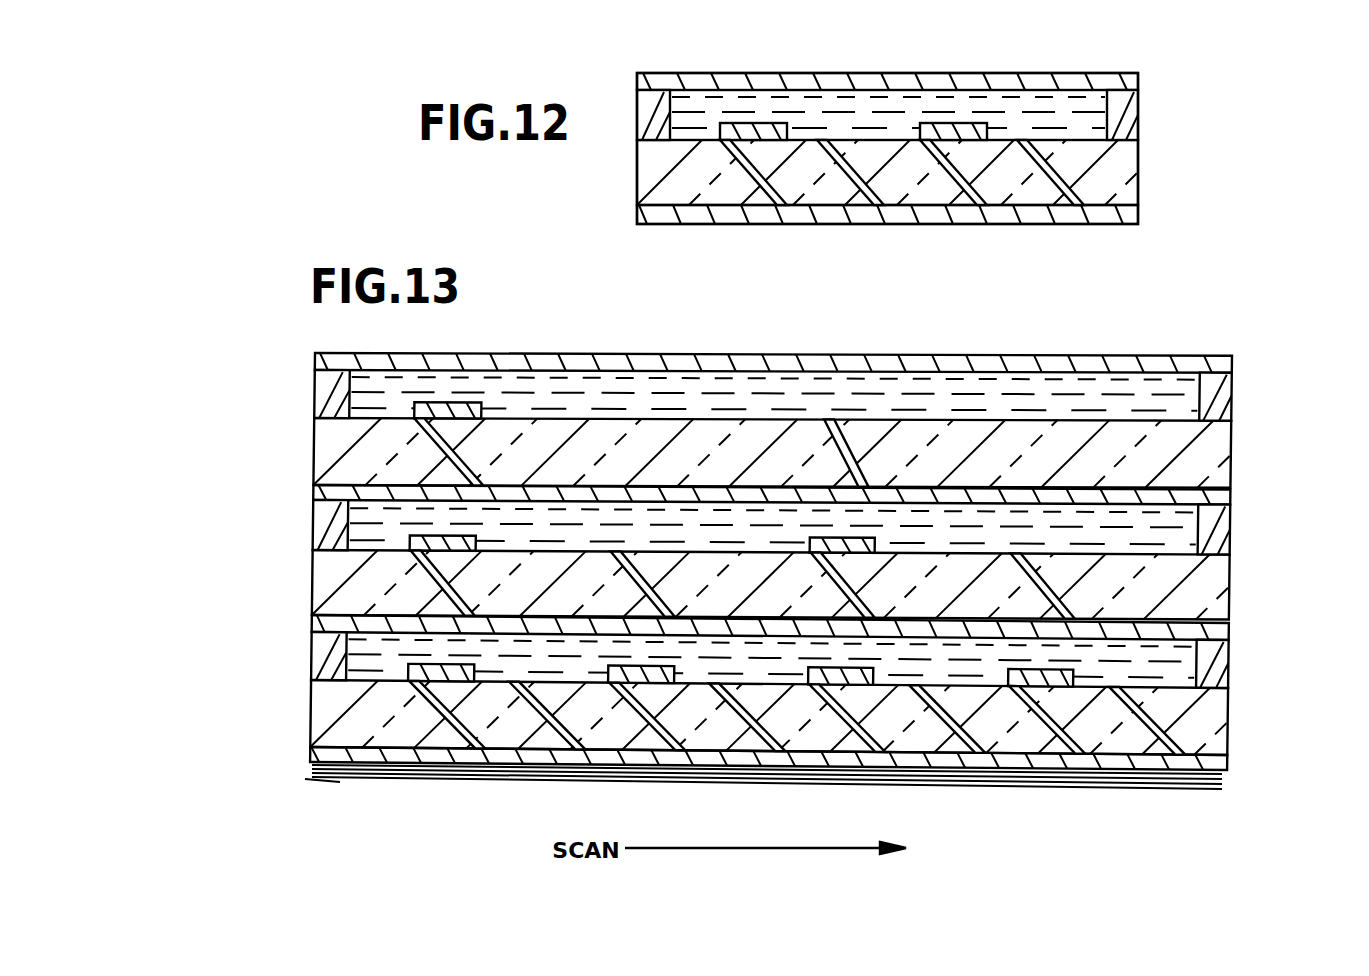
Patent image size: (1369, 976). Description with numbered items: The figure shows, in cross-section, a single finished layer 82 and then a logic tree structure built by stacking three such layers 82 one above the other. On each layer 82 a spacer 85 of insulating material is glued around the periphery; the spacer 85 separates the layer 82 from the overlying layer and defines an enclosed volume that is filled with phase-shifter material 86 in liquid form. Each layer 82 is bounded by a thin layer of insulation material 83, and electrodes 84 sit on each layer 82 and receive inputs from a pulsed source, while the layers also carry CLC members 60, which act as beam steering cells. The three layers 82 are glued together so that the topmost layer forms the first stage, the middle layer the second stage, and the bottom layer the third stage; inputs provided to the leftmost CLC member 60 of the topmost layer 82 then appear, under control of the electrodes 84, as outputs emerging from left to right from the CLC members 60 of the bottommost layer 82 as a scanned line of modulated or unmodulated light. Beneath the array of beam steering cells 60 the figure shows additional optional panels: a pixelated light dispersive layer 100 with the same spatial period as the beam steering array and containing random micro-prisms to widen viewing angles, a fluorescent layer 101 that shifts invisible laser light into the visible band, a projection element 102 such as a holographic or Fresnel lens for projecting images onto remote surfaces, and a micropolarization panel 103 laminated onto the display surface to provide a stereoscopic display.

In FIG. 12, the CLC member 60 is at (856, 192).
In FIG. 13, the CLC member 60 is at (660, 598).
In FIG. 12, the layer 82 is at (612, 174).
In FIG. 13, the layer 82 is at (1237, 462).
In FIG. 12, the insulating layer 83 is at (830, 74).
In FIG. 13, the insulating layer 83 is at (845, 356).
In FIG. 12, the electrode 84 is at (740, 128).
In FIG. 13, the electrode 84 is at (455, 400).
In FIG. 12, the spacer 85 is at (656, 93).
In FIG. 13, the spacer 85 is at (316, 410).
In FIG. 12, the phase-shifter material 86 is at (1035, 103).
In FIG. 13, the phase-shifter material 86 is at (1098, 388).
In FIG. 13, the pixelated light dispersive layer 100 is at (1200, 795).
In FIG. 13, the fluorescent layer 101 is at (1238, 777).
In FIG. 13, the projection element 102 is at (1230, 782).
In FIG. 13, the micropolarization panel 103 is at (1232, 793).